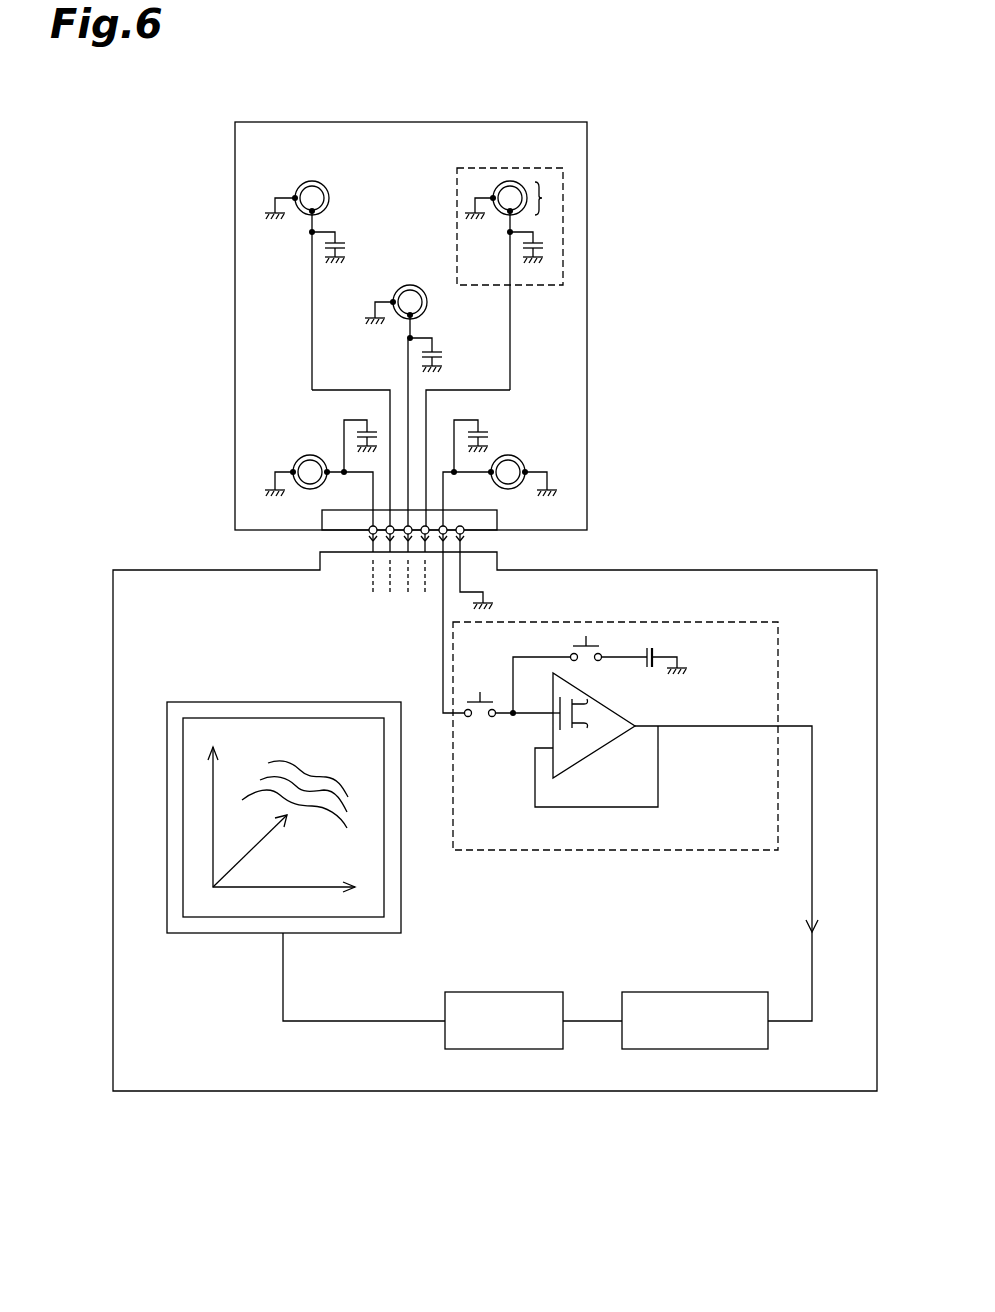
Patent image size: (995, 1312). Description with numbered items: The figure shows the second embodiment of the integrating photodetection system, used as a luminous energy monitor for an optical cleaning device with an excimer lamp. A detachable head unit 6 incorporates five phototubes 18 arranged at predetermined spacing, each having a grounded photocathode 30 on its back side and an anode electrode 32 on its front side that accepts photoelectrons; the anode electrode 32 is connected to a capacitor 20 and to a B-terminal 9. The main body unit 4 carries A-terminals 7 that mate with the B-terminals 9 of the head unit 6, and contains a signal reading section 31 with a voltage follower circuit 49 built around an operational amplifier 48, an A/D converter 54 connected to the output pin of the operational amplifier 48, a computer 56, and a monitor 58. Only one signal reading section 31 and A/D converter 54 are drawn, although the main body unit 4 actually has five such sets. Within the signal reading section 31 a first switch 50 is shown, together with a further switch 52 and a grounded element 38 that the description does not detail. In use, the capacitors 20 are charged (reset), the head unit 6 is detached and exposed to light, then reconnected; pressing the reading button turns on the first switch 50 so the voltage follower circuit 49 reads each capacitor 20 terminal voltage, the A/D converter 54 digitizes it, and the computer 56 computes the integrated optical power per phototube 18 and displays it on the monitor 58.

The main body unit 4 is at (472, 1092).
The head unit 6 is at (587, 345).
The A-terminal 7 is at (508, 558).
The B-terminal 9 is at (507, 520).
The phototube 18 is at (447, 279).
The capacitor 20 is at (496, 279).
The photocathode 30 is at (498, 183).
The anode electrode 32 is at (498, 213).
The signal reading section 31 is at (644, 701).
The capacitor 38 is at (660, 648).
The operational amplifier 48 is at (600, 733).
The voltage follower circuit 49 is at (670, 798).
The first switch 50 is at (488, 695).
The reset switch 52 is at (600, 633).
The A/D converter 54 is at (695, 992).
The computer 56 is at (505, 992).
The monitor 58 is at (307, 702).